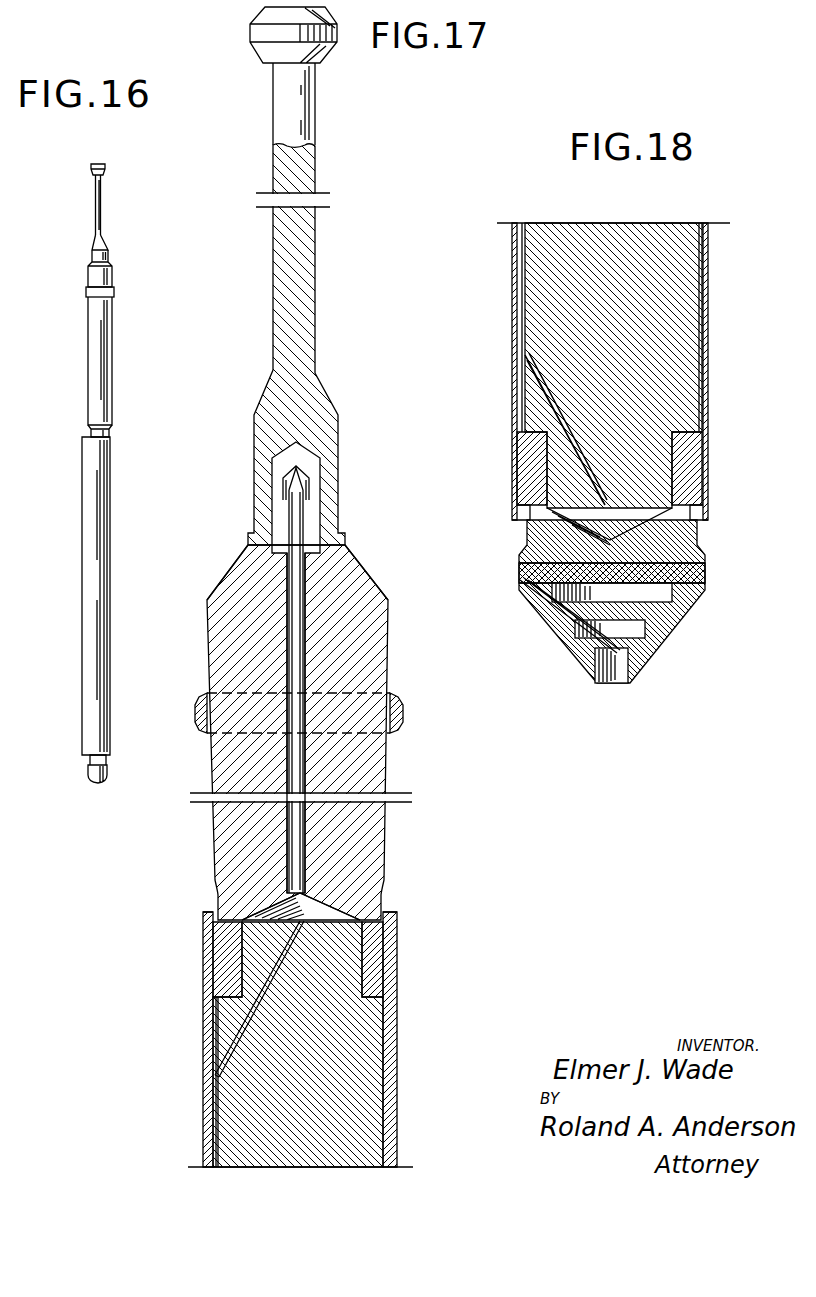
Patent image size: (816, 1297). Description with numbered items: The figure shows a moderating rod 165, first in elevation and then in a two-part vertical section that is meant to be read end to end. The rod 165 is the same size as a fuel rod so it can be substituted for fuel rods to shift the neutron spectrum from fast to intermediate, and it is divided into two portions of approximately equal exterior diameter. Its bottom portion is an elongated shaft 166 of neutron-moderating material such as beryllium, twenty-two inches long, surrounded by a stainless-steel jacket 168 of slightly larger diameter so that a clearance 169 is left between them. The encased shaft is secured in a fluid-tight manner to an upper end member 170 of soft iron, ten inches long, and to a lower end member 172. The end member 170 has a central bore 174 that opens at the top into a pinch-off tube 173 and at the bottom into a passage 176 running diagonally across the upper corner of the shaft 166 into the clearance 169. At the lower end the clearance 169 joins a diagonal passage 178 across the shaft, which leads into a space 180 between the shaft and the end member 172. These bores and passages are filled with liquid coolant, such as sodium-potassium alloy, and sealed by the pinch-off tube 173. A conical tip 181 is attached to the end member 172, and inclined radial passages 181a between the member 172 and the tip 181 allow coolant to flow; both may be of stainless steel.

In FIG. 16, the moderating rod 165 is at (113, 497).
In FIG. 17, the moderating rod 165 is at (373, 573).
In FIG. 17, the elongated shaft 166 is at (230, 1140).
In FIG. 18, the elongated shaft 166 is at (537, 243).
In FIG. 17, the jacket 168 is at (203, 925).
In FIG. 18, the jacket 168 is at (515, 312).
In FIG. 17, the clearance 169 is at (215, 1022).
In FIG. 18, the clearance 169 is at (521, 275).
In FIG. 16, the end member 170 is at (110, 378).
In FIG. 17, the end member 170 is at (385, 862).
In FIG. 18, the end member 172 is at (690, 470).
In FIG. 17, the pinch-off tube 173 is at (283, 500).
In FIG. 17, the central bore 174 is at (300, 762).
In FIG. 17, the passage 176 is at (215, 1075).
In FIG. 18, the diagonal passage 178 is at (530, 380).
In FIG. 18, the space 180 is at (650, 508).
In FIG. 16, the conical tip 181 is at (100, 785).
In FIG. 18, the conical tip 181 is at (613, 601).
In FIG. 18, the inclined radial passages 181a is at (520, 580).